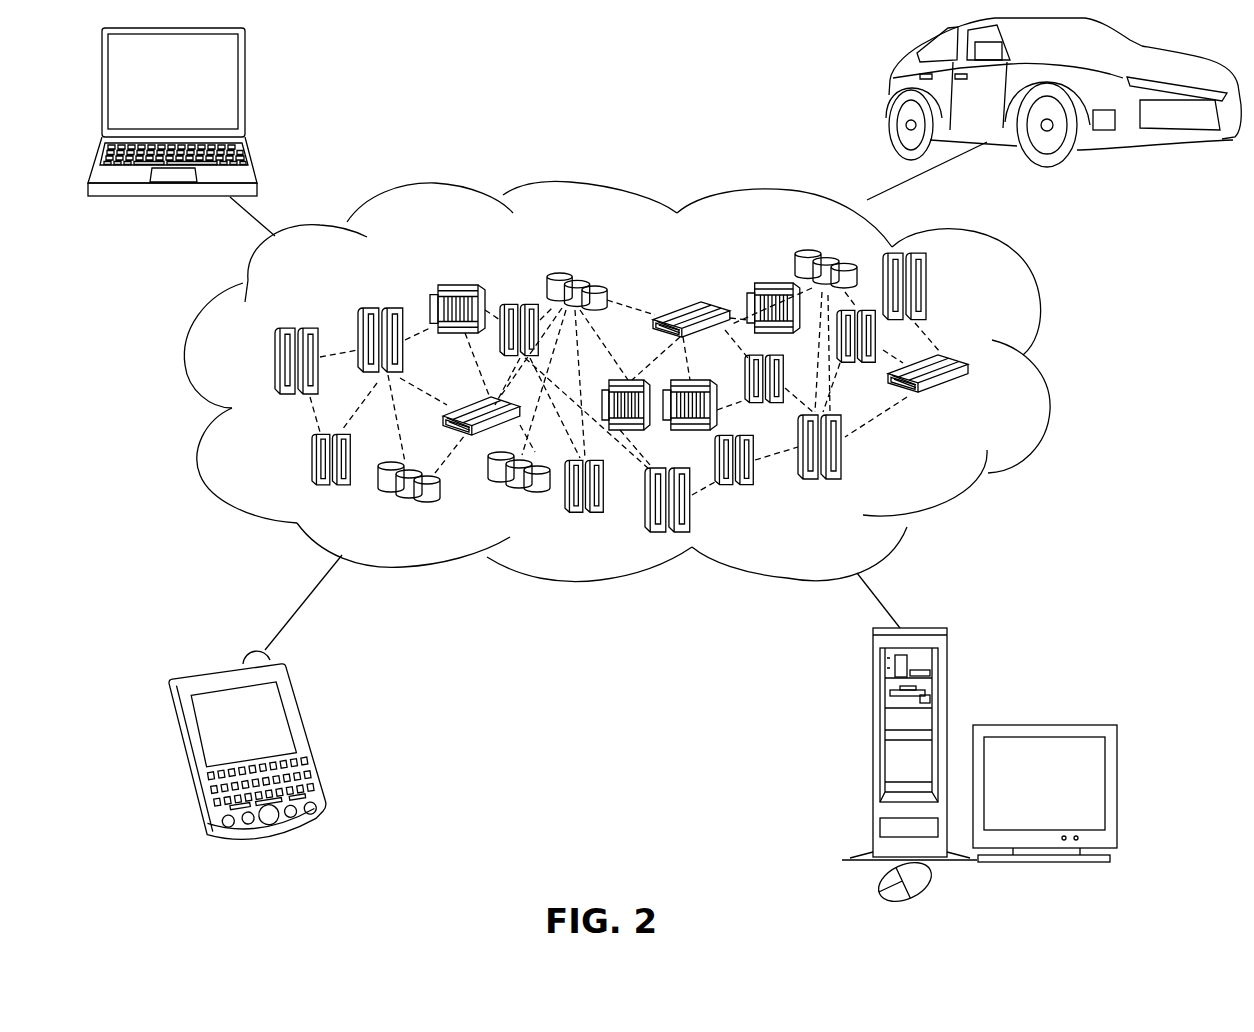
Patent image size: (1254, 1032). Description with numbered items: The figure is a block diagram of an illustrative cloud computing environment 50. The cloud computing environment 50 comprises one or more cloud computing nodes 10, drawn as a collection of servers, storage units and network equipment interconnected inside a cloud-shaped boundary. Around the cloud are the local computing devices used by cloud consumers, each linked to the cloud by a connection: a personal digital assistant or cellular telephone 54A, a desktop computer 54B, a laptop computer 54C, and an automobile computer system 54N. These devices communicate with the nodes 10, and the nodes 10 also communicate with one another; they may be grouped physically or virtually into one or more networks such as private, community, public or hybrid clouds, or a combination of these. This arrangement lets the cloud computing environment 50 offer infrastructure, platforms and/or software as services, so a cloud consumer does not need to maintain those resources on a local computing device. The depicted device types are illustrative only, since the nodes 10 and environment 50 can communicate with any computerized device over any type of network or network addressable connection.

The cloud computing node 10 is at (953, 479).
The cloud computing environment 50 is at (651, 381).
The personal digital assistant or cellular telephone 54A is at (300, 705).
The desktop computer 54B is at (870, 690).
The laptop computer 54C is at (245, 67).
The automobile computer system 54N is at (885, 85).